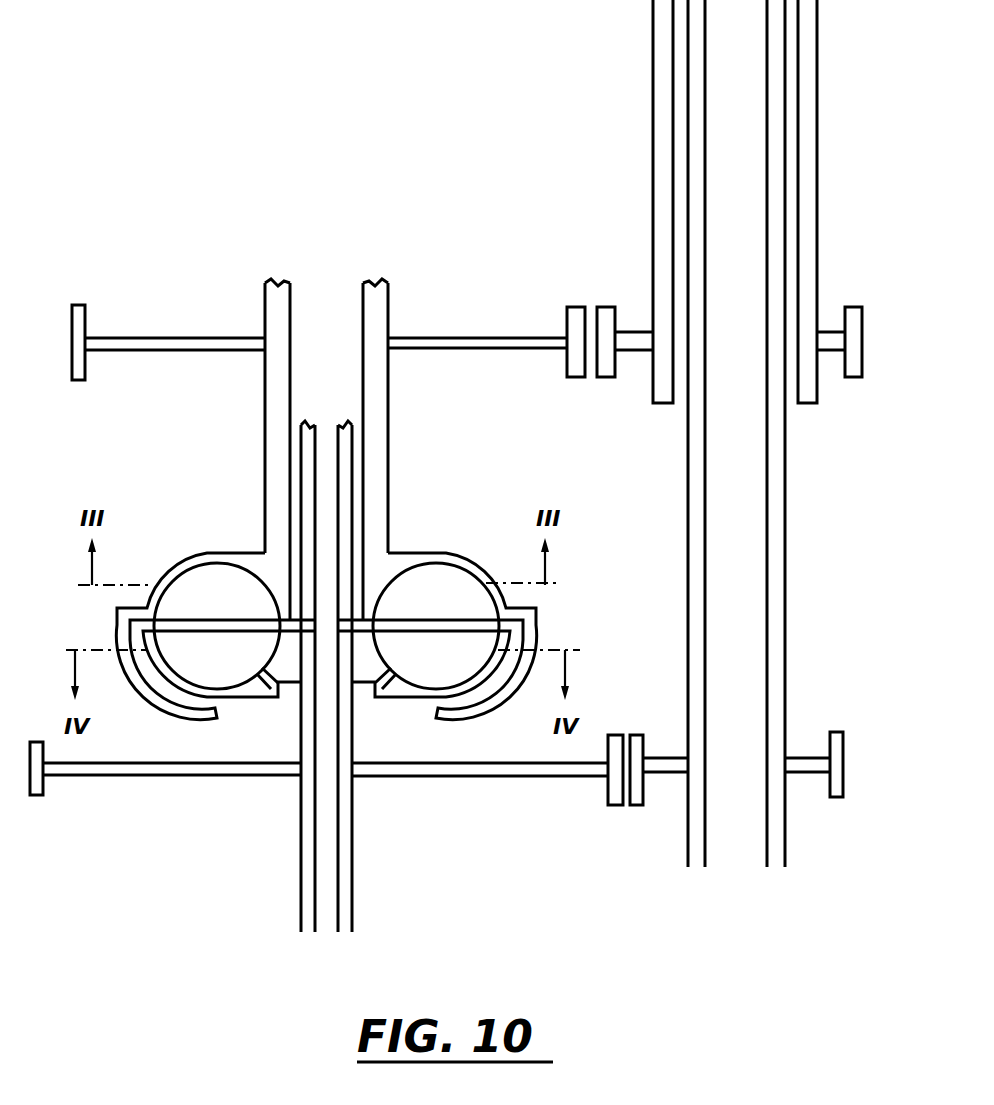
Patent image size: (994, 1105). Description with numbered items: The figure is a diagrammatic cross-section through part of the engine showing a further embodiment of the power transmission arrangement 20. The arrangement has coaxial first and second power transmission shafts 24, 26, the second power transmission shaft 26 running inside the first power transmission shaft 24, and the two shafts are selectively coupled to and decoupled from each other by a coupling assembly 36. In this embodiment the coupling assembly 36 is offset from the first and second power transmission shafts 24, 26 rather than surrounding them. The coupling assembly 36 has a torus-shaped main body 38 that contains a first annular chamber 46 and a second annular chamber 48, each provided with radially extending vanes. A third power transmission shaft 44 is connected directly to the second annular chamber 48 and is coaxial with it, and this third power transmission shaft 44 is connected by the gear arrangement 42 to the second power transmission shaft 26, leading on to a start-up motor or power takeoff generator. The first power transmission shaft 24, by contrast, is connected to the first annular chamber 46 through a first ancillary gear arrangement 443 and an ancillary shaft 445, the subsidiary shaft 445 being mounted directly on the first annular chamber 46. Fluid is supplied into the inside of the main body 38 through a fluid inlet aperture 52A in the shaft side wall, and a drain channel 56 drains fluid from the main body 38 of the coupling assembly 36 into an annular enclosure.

The power transmission arrangement 20 is at (298, 693).
The first power transmission shaft 24 is at (650, 127).
The second power transmission shaft 26 is at (684, 564).
The coupling assembly 36 is at (459, 546).
The main body 38 is at (390, 554).
The third gear arrangement 42 is at (626, 812).
The third power transmission shaft 44 is at (307, 577).
The first annular chamber 46 is at (199, 598).
The second annular chamber 48 is at (192, 662).
The fluid inlet aperture 52A is at (307, 637).
The drain channel 56 is at (137, 648).
The first ancillary gear arrangement 443 is at (584, 298).
The ancillary shaft 445 is at (380, 312).